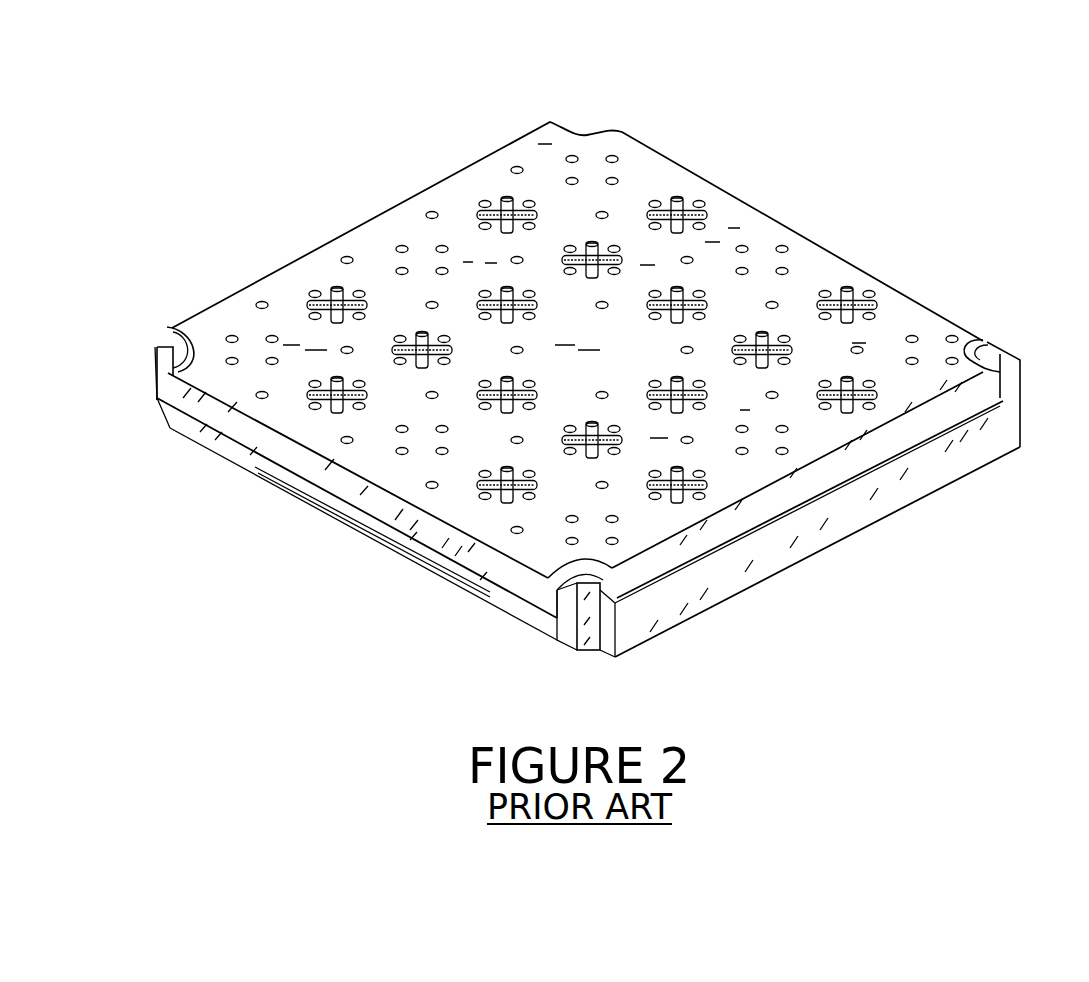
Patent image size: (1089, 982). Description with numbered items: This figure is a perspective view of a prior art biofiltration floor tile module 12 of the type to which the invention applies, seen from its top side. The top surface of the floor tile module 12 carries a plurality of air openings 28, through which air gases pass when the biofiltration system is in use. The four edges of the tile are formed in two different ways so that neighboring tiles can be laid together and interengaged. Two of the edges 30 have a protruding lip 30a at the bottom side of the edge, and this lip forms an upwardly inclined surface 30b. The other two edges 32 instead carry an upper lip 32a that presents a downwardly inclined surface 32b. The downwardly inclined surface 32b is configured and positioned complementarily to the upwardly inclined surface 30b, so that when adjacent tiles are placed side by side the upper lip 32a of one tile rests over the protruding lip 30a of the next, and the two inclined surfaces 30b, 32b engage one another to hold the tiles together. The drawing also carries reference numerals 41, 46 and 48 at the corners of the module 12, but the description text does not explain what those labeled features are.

The floor tile module 12 is at (965, 233).
The air openings 28 is at (683, 200).
The edges 30 is at (830, 393).
The protruding lip 30a is at (877, 517).
The upwardly inclined surface 30b is at (793, 503).
The edges 32 is at (340, 366).
The upper lip 32a is at (385, 505).
The downwardly inclined surface 32b is at (158, 368).
The corner post 41 is at (587, 135).
The corner notch 46 is at (168, 330).
The corner notch 48 is at (965, 340).